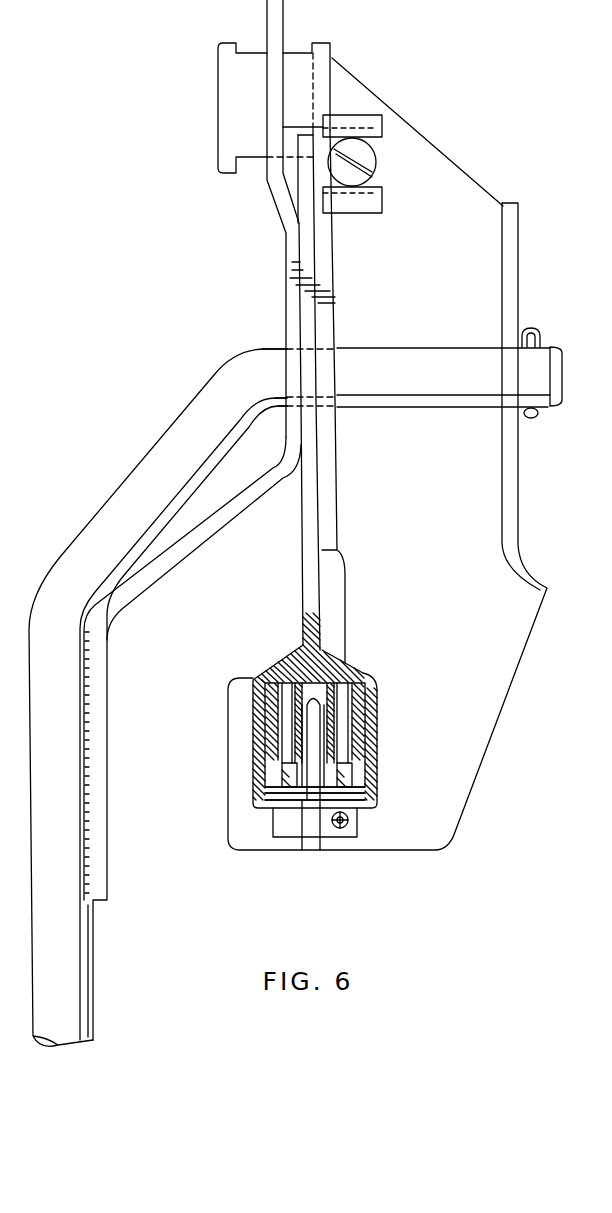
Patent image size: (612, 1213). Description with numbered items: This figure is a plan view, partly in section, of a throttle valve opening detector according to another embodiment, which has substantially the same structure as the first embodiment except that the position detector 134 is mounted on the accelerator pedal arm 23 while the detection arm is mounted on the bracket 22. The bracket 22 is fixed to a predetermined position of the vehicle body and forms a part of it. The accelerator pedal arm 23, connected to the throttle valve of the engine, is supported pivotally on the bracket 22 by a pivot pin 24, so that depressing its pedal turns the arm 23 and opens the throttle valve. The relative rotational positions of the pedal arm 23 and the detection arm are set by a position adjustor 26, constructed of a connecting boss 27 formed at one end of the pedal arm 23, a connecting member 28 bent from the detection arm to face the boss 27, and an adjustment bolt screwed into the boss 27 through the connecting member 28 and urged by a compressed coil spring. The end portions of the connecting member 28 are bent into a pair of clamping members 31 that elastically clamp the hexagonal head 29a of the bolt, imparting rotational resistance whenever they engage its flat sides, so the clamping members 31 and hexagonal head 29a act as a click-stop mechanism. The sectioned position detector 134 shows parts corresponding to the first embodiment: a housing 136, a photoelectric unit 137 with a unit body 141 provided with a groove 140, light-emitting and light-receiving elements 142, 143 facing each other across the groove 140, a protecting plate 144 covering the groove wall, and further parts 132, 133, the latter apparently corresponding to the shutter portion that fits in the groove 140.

The bracket 22 is at (492, 205).
The accelerator pedal arm 23 is at (97, 723).
The pivot pin 24 is at (395, 362).
The position adjustor 26 is at (364, 107).
The connecting boss 27 is at (287, 172).
The connecting member 28 is at (383, 150).
The hexagonal head 29a is at (383, 193).
The clamping members 31 is at (383, 115).
The rod 132 is at (307, 800).
The screw 133 is at (318, 830).
The position detector 134 is at (245, 660).
The housing 136 is at (372, 670).
The liner 137 is at (366, 690).
The plunger 140 is at (318, 697).
The sleeve 141 is at (356, 720).
The seal ring 142 is at (287, 770).
The seal ring 143 is at (348, 775).
The end plate 144 is at (300, 790).